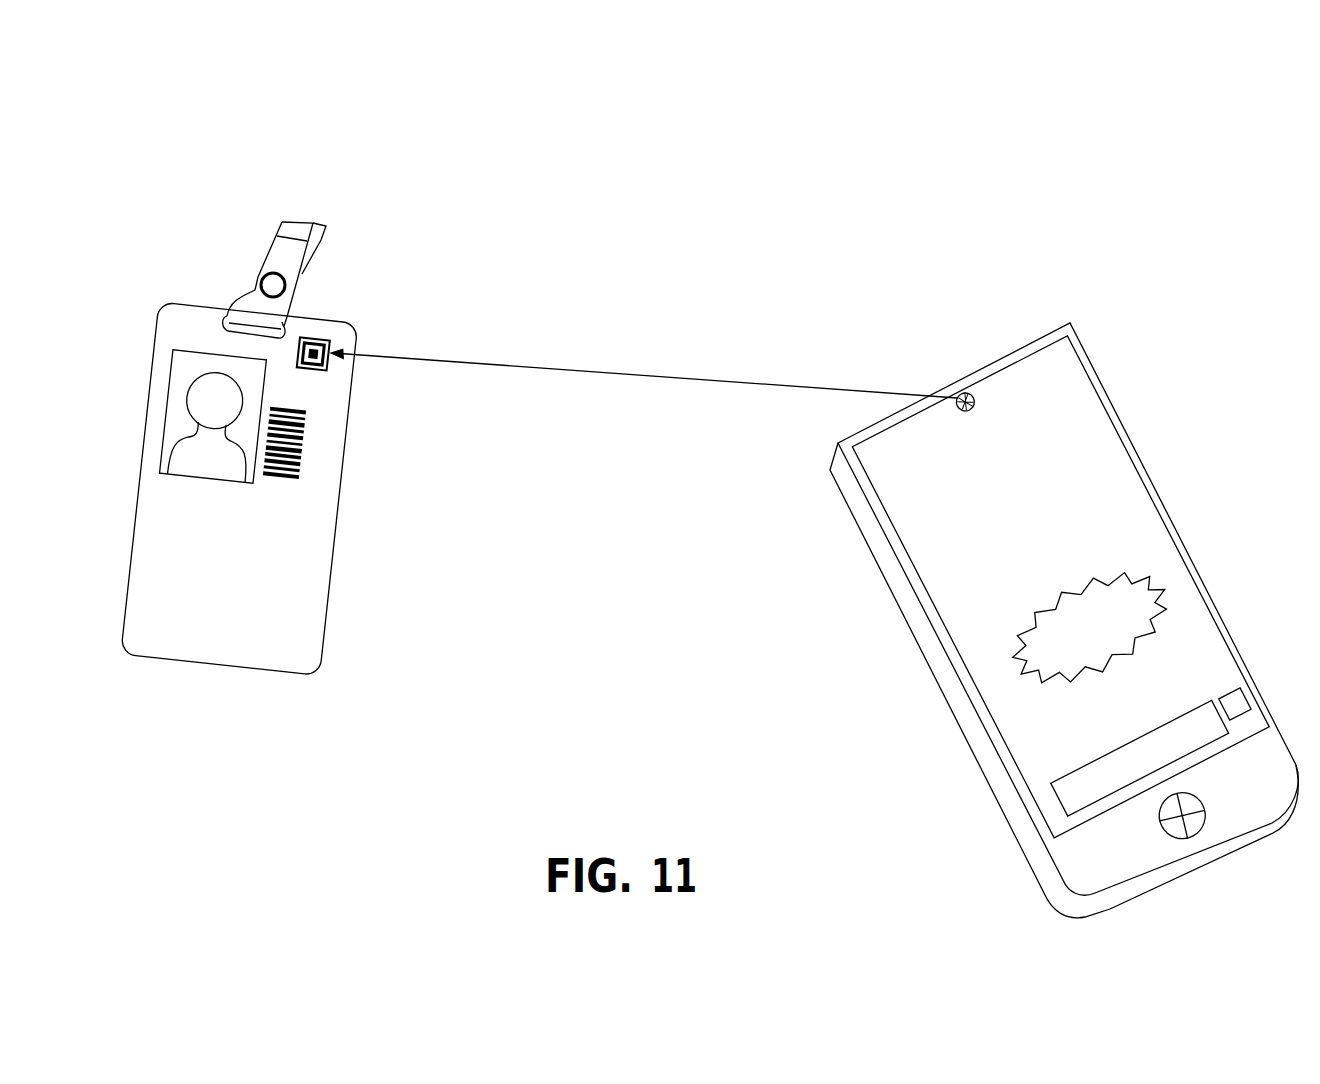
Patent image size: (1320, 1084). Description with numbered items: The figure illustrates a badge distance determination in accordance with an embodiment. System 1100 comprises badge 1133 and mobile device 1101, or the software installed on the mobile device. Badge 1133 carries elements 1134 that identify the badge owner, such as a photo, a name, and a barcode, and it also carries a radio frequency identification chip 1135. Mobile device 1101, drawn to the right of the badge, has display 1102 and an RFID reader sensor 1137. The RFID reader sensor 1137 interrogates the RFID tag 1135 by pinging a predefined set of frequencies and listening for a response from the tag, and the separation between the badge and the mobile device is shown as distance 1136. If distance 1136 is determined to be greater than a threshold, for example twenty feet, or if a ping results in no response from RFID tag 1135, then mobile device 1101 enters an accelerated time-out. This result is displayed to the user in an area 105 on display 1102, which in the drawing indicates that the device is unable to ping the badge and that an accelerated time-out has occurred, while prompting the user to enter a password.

The system 1100 is at (318, 122).
The badge 1133 is at (200, 305).
The elements 1134 is at (238, 484).
The radio frequency identification (RFID) chip 1135 is at (319, 346).
The distance 1136 is at (513, 365).
The RFID reader sensor 1137 is at (977, 393).
The mobile device 1101 is at (1083, 350).
The display 1102 is at (1123, 425).
The accelerated time-out notification 105 is at (1168, 593).